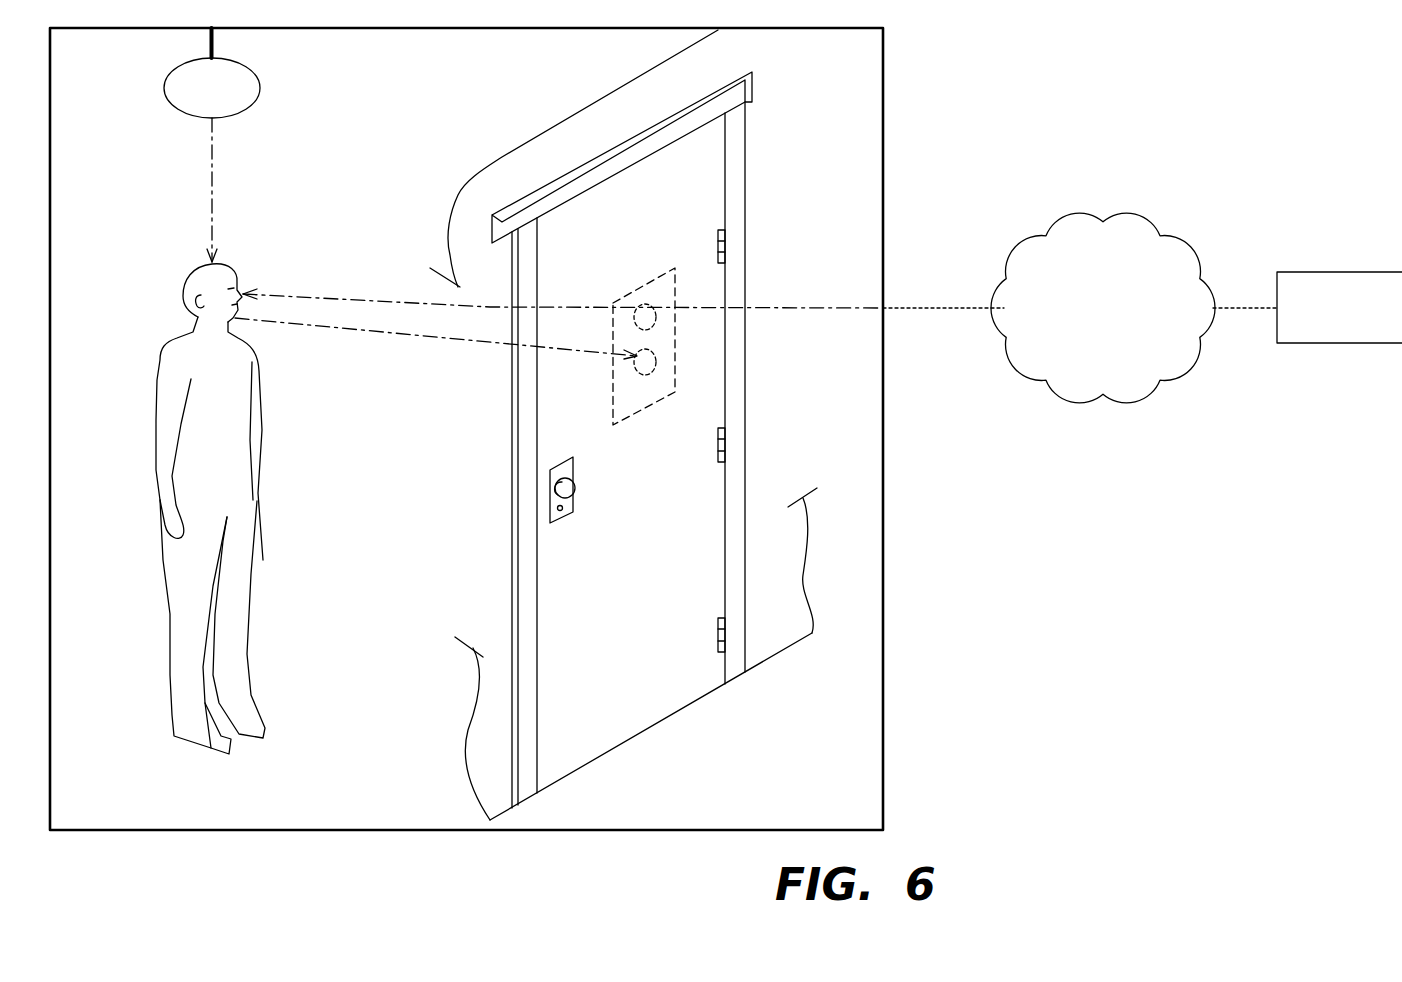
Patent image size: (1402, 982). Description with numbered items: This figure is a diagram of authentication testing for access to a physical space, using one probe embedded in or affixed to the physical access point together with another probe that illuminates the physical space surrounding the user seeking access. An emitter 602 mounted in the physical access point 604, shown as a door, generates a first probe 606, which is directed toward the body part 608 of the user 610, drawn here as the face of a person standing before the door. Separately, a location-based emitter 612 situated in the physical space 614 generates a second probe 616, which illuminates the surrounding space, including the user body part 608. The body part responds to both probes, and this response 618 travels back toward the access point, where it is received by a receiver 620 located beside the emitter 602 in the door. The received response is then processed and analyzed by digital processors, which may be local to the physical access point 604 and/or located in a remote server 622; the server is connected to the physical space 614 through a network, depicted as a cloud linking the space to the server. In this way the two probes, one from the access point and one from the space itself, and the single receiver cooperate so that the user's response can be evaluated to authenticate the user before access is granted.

The emitter 602 is at (648, 304).
The physical access point 604 is at (745, 152).
The probe 1 606 is at (308, 296).
The body part 608 is at (228, 298).
The user 610 is at (167, 489).
The location-based emitter 612 is at (262, 82).
The physical space 614 is at (885, 165).
The probe 2 616 is at (212, 217).
The response 618 is at (337, 330).
The receiver 620 is at (657, 355).
The remote server 622 is at (1300, 270).